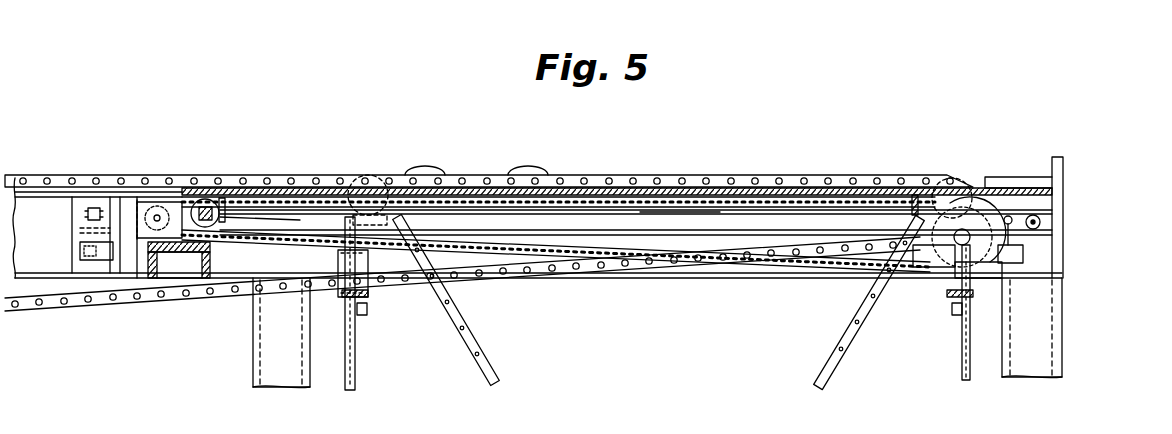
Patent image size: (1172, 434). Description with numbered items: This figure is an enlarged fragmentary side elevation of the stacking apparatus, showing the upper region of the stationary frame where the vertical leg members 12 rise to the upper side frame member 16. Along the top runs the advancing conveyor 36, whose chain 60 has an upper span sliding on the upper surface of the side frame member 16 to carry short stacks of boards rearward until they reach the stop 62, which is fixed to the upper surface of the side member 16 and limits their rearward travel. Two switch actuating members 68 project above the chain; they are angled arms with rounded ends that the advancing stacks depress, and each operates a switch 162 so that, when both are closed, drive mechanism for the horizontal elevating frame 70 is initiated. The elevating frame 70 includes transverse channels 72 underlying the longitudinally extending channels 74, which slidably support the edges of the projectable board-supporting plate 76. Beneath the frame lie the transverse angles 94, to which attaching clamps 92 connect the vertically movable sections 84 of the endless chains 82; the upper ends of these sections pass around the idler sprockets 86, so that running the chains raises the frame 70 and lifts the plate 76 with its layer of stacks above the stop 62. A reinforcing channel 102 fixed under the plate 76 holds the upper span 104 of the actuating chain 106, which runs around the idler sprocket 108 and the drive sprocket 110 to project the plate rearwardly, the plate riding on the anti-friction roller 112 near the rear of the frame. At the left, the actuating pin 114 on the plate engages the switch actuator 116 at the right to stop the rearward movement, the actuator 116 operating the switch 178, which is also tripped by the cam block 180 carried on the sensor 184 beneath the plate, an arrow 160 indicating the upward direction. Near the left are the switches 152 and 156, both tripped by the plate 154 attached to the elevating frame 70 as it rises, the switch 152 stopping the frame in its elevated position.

The vertical leg member 12 is at (253, 375).
The upper side frame member 16 is at (700, 280).
The advancing conveyor 36 is at (269, 164).
The chain 60 is at (228, 182).
The stop 62 is at (1057, 155).
The switch actuating member 68 is at (422, 167).
The elevating frame 70 is at (615, 245).
The transverse channel 72 is at (132, 280).
The longitudinally extending channel 74 is at (632, 218).
The board-supporting plate 76 is at (793, 173).
The endless chain 82 is at (360, 349).
The vertically movable section 84 is at (355, 385).
The idler sprocket 86 is at (355, 173).
The attaching clamp 92 is at (343, 320).
The transverse angle 94 is at (368, 293).
The reinforcing channel 102 is at (196, 160).
The upper span of actuating chain 104 is at (589, 188).
The actuating chain 106 is at (820, 280).
The idler sprocket 108 is at (137, 178).
The drive sprocket 110 is at (977, 188).
The anti-friction roller 112 is at (1063, 222).
The actuating pin 114 is at (222, 222).
The switch actuator 116 is at (1010, 216).
The switch 152 is at (80, 248).
The plate 154 is at (122, 237).
The switch 156 is at (88, 207).
The arrow 160 is at (458, 222).
The switch 162 is at (920, 226).
The switch 178 is at (1023, 257).
The cam block 180 is at (233, 217).
The sensor 184 is at (702, 208).